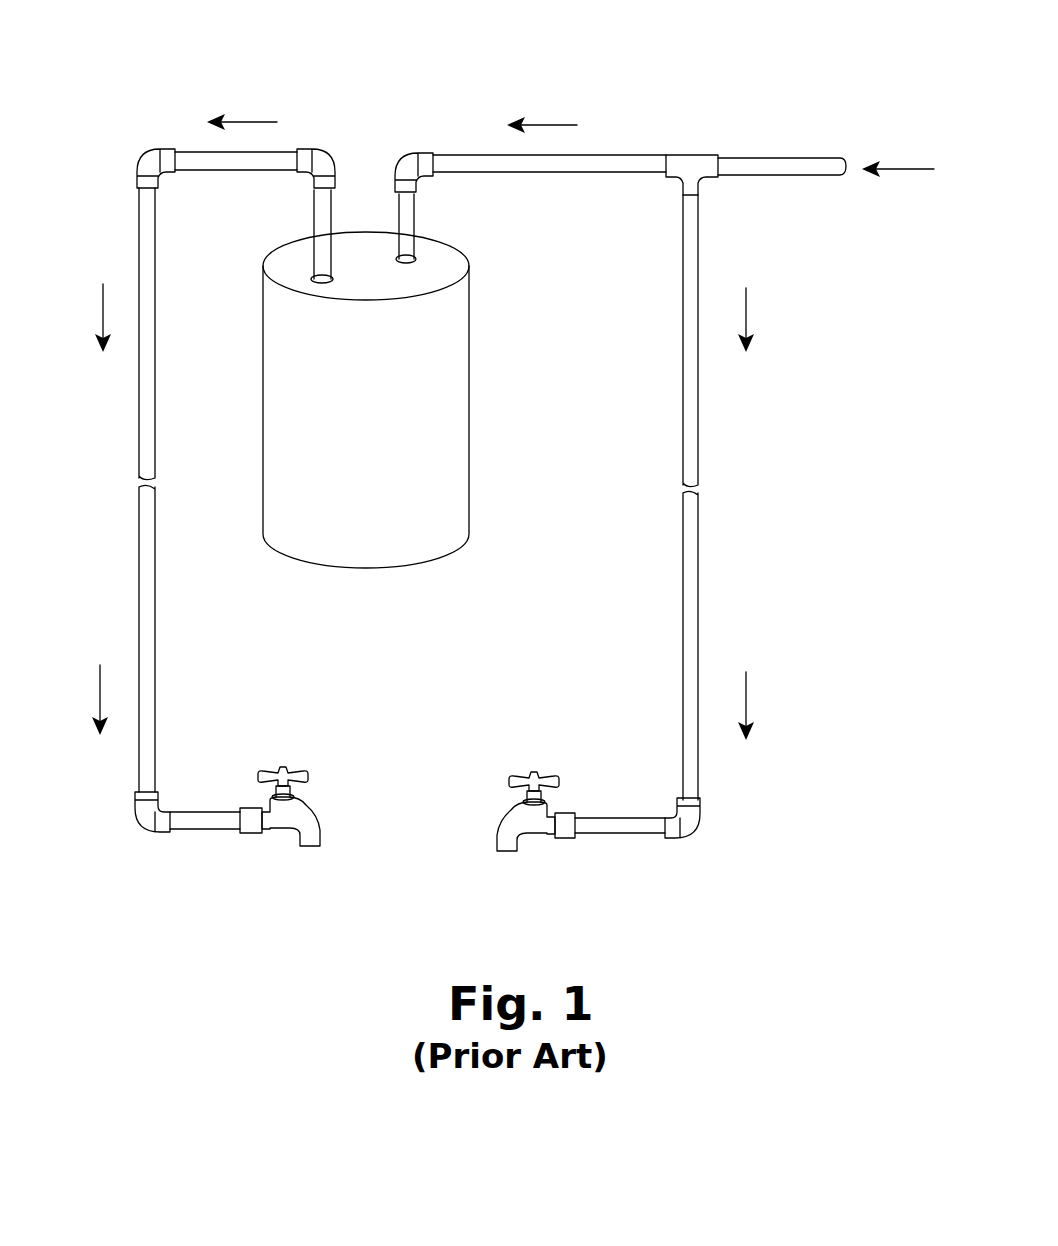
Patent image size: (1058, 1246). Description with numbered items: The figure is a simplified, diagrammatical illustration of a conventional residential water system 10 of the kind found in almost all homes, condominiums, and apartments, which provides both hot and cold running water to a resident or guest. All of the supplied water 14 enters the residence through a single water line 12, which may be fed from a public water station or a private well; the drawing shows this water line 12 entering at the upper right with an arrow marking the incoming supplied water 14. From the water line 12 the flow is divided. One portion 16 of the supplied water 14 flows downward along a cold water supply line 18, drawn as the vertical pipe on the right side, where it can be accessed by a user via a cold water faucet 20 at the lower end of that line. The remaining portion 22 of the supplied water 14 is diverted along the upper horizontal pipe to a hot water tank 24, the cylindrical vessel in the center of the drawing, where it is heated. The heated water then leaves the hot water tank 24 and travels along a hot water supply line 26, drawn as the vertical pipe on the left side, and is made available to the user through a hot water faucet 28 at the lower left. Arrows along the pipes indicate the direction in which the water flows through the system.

The residential water system 10 is at (541, 52).
The water line 12 is at (753, 177).
The supplied water 14 is at (913, 160).
The portion of the supplied water 16 is at (758, 698).
The cold water supply line 18 is at (699, 452).
The cold water faucet 20 is at (535, 835).
The remaining portion of the supplied water 22 is at (549, 122).
The hot water tank 24 is at (470, 478).
The hot water supply line 26 is at (157, 628).
The hot water faucet 28 is at (285, 835).